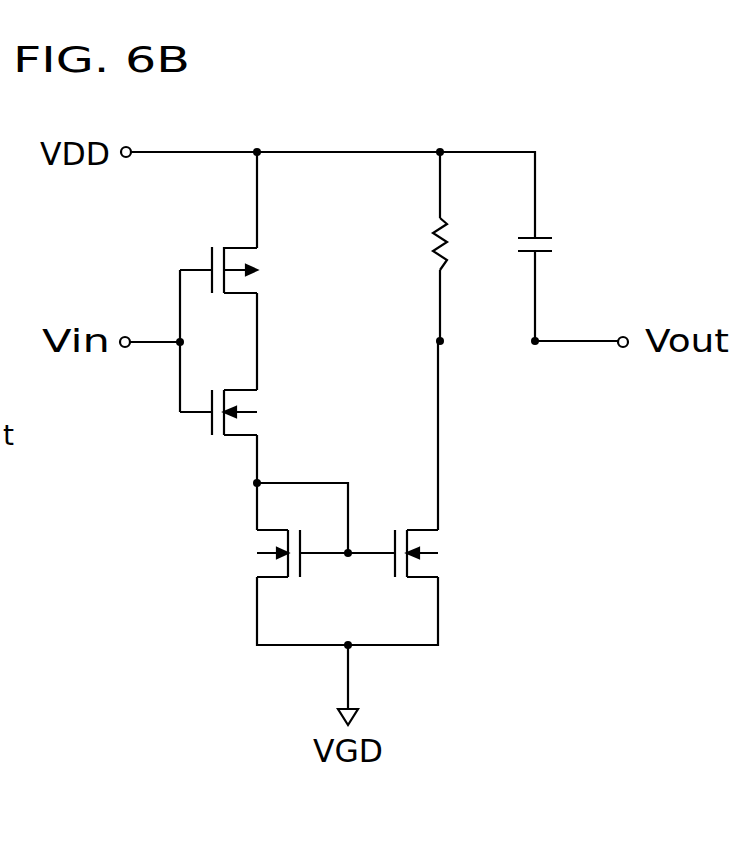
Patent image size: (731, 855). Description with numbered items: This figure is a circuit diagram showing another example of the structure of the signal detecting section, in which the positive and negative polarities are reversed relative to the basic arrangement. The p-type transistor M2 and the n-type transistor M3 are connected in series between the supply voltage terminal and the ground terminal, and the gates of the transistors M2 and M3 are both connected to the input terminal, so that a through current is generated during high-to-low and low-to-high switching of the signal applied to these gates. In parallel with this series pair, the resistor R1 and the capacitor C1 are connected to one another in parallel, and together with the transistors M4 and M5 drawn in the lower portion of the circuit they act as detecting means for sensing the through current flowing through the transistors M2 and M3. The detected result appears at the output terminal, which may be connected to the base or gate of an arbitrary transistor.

The p-type transistor M2 is at (263, 259).
The n-type transistor M3 is at (260, 401).
The NMOS transistor M4 is at (448, 566).
The NMOS transistor M5 is at (250, 543).
The resistor R1 is at (430, 255).
The capacitor C1 is at (555, 243).